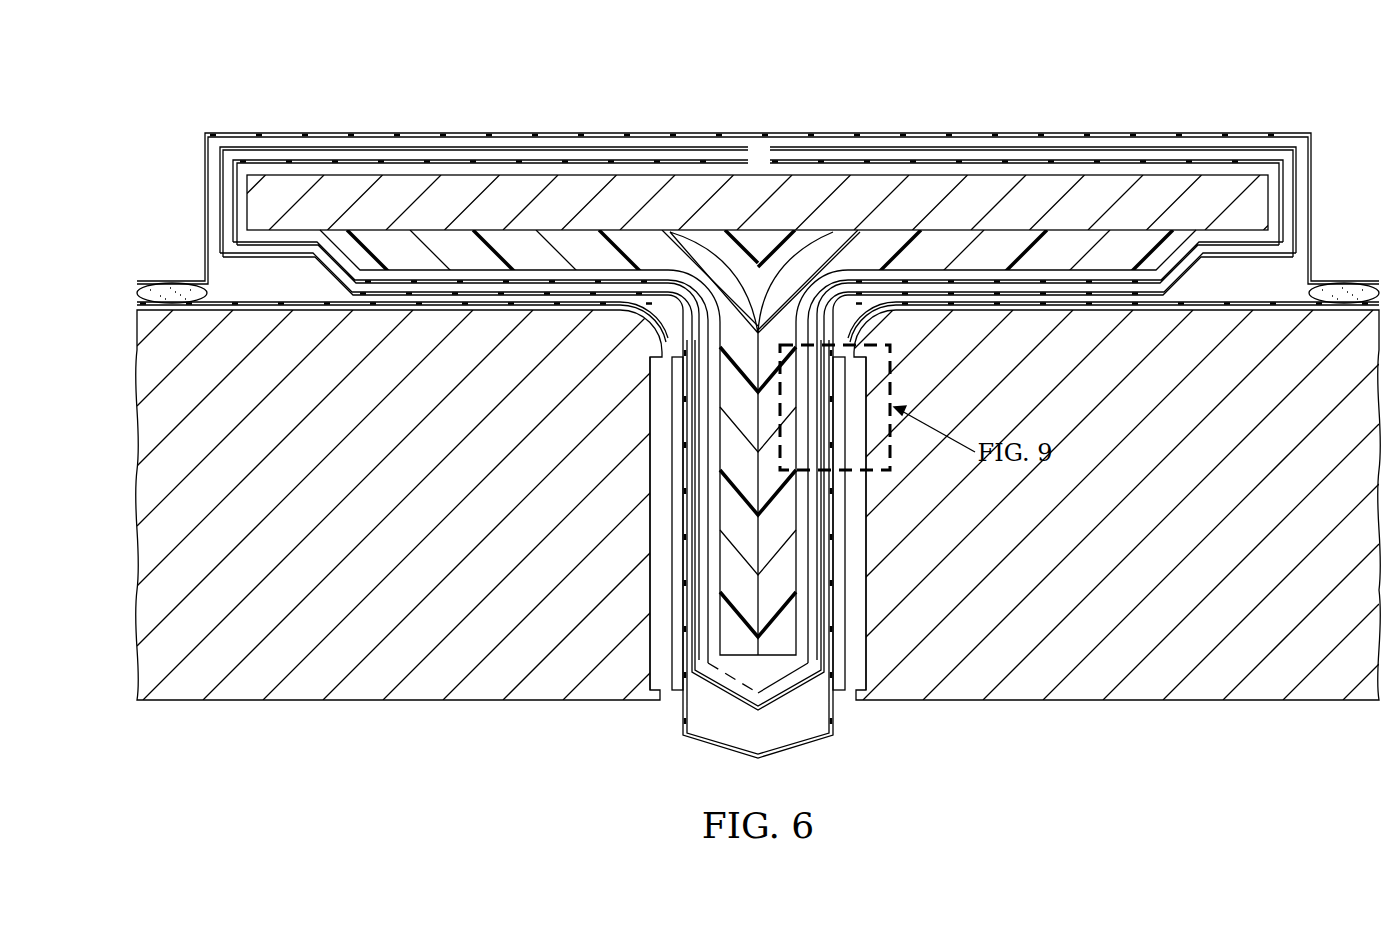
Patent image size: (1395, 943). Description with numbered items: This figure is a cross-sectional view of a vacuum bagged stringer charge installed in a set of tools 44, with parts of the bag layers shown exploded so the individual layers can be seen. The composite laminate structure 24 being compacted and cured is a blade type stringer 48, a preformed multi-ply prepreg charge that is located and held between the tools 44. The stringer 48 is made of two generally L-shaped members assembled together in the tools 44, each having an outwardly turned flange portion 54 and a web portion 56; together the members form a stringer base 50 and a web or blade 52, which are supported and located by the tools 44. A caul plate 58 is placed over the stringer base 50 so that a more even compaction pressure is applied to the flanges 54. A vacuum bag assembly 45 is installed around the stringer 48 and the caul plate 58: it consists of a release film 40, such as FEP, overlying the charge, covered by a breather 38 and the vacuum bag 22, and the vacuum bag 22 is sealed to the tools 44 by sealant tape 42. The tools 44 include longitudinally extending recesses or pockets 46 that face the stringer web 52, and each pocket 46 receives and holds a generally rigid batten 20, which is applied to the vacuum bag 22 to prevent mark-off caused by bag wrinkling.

The batten 20 is at (677, 598).
The vacuum bag 22 is at (1105, 135).
The composite laminate structure 24 is at (593, 221).
The breather 38 is at (1020, 149).
The release film 40 is at (940, 162).
The sealant tape 42 is at (180, 283).
The tools 44 is at (388, 519).
The vacuum bag assembly 45 is at (1224, 96).
The pockets 46 is at (663, 486).
The stringer 48 is at (428, 262).
The stringer base 50 is at (514, 282).
The web 52 is at (731, 664).
The flange portion 54 is at (455, 240).
The web portion 56 is at (730, 386).
The caul plate 58 is at (690, 183).